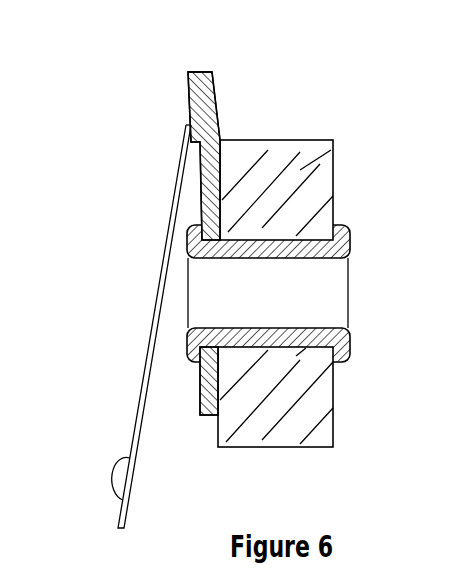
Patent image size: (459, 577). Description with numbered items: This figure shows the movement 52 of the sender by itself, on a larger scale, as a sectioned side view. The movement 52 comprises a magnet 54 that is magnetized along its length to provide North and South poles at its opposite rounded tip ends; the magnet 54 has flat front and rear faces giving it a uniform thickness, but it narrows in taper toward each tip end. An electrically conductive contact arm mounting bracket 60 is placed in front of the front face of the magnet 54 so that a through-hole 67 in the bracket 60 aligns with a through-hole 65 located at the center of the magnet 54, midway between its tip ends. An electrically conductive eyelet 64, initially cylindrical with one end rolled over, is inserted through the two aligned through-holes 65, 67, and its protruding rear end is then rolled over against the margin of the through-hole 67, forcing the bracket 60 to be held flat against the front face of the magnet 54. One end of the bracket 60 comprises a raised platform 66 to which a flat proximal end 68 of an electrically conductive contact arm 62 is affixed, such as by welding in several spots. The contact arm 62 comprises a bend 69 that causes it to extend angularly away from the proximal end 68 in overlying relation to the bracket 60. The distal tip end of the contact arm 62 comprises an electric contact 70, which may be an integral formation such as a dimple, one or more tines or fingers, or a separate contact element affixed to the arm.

The movement 52 is at (343, 167).
The magnet 54 is at (270, 407).
The contact arm mounting bracket 60 is at (215, 402).
The contact arm 62 is at (120, 528).
The eyelet 64 is at (343, 355).
The through-hole 65 is at (268, 242).
The raised platform 66 is at (205, 105).
The through-hole 67 is at (268, 293).
The proximal end 68 is at (188, 92).
The bend 69 is at (187, 127).
The electric contact 70 is at (115, 477).